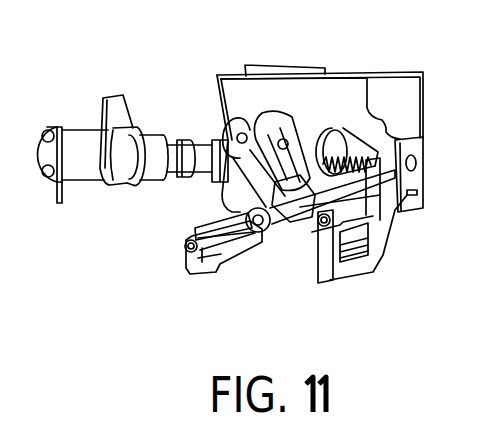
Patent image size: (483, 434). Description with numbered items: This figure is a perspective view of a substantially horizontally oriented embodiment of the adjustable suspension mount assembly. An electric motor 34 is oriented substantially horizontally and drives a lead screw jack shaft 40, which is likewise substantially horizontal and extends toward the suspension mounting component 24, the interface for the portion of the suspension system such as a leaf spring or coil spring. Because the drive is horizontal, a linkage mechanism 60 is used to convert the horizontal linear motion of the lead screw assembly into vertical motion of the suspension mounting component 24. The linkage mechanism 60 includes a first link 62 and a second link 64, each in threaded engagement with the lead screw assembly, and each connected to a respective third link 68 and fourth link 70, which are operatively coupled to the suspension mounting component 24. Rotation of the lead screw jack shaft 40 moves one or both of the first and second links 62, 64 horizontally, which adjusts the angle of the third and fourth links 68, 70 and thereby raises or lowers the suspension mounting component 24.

The suspension mounting component 24 is at (221, 108).
The electric motor 34 is at (92, 171).
The lead screw jack shaft 40 is at (348, 157).
The linkage mechanism 60 is at (391, 277).
The first link 62 is at (220, 264).
The second link 64 is at (383, 235).
The third link 68 is at (210, 223).
The fourth link 70 is at (298, 238).